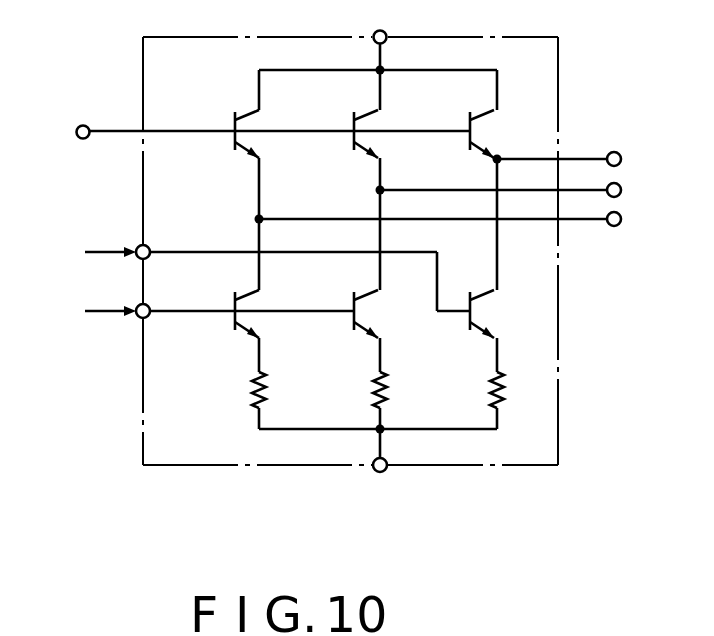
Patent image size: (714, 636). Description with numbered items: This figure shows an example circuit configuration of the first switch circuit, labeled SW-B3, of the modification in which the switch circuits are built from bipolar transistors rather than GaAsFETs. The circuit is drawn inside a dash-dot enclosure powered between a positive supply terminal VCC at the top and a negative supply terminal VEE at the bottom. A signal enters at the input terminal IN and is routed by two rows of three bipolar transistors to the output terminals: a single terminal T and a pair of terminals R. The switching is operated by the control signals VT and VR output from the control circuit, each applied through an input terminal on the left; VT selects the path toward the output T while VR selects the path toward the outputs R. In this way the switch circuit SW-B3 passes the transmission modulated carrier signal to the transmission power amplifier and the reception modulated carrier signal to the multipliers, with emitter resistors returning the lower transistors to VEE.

The switch circuit SW-B3 is at (197, 14).
The positive supply terminal VCC is at (390, 35).
The negative supply terminal VEE is at (386, 472).
The input terminal IN is at (62, 133).
The control signal VT is at (92, 253).
The control signal VR is at (92, 312).
The transmit output terminal T is at (625, 160).
The receive output terminals R is at (626, 205).